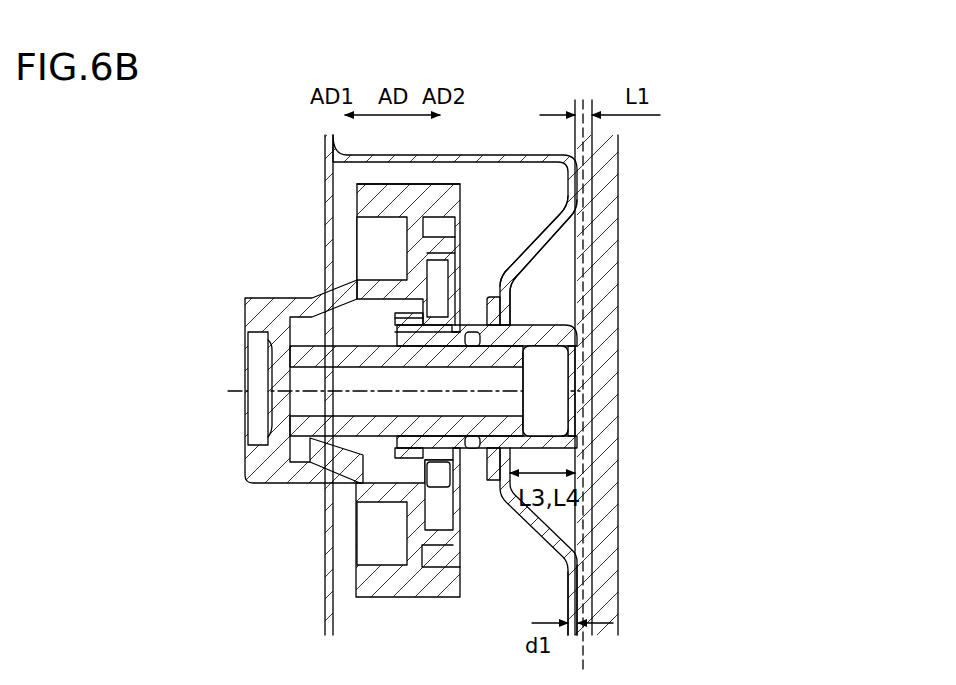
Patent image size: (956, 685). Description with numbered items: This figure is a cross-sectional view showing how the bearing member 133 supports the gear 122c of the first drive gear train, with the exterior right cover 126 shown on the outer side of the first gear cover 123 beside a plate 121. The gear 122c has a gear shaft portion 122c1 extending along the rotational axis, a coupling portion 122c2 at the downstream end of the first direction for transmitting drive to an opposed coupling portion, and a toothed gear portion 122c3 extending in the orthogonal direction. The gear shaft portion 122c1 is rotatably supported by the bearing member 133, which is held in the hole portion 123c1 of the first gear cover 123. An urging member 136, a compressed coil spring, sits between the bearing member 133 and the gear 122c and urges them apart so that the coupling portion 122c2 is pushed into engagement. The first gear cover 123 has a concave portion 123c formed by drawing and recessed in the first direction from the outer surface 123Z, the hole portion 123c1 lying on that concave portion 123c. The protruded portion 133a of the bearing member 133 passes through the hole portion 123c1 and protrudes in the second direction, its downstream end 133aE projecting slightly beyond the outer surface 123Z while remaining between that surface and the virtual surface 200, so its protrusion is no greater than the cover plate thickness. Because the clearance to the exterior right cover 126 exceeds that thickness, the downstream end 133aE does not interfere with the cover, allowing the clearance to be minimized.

The plate 121 is at (327, 623).
The gear 122c is at (330, 329).
The gear shaft portion 122c1 is at (523, 357).
The coupling portion 122c2 is at (257, 357).
The gear portion 122c3 is at (423, 193).
The first gear cover 123 is at (345, 155).
The concave portion 123c is at (510, 308).
The hole portion 123c1 is at (507, 449).
The outer surface 123Z is at (577, 590).
The exterior right cover 126 is at (603, 563).
The bearing member 133 is at (541, 342).
The protruded portion 133a is at (573, 437).
The downstream end 133aE is at (578, 428).
The urging member 136 is at (413, 455).
The virtual surface 200 is at (590, 173).